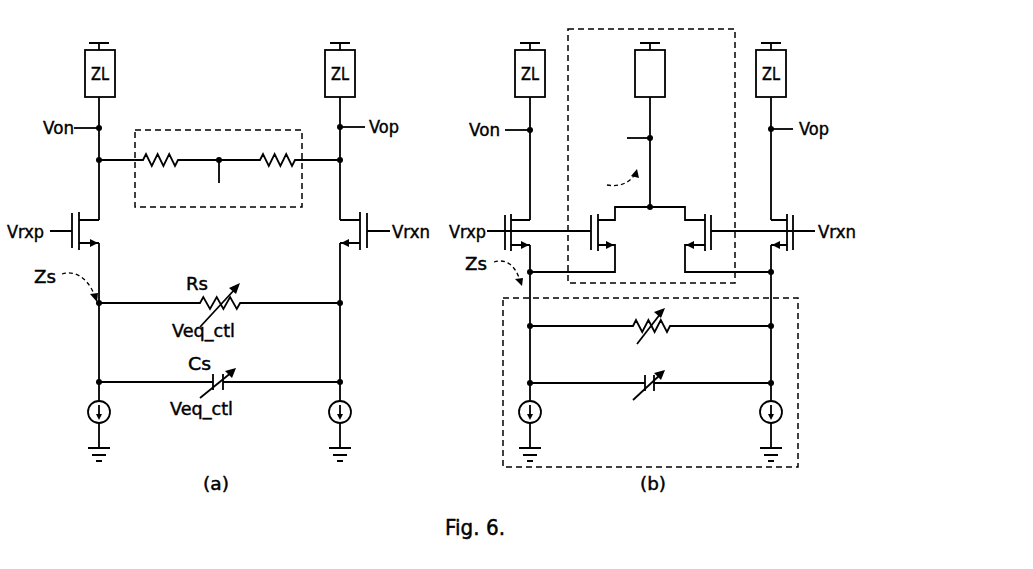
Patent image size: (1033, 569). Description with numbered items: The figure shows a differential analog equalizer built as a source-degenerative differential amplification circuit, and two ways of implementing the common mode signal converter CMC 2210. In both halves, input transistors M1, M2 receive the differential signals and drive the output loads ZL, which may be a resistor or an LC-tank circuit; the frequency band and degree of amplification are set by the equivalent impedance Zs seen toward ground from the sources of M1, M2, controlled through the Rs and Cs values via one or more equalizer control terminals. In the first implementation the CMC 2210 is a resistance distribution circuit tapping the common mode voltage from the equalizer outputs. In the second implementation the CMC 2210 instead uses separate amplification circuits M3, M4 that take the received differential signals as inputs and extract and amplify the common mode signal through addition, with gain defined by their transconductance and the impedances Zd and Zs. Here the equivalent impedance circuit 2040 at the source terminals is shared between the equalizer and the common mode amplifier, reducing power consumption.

The common mode signal converter (CMC) 2210 is at (433, 141).
The equivalent impedance (Zs) circuit 2040 is at (798, 340).
The transistor M1 is at (320, 228).
The transistor M2 is at (563, 228).
The amplification circuit M3 is at (590, 239).
The amplification circuit M4 is at (710, 239).